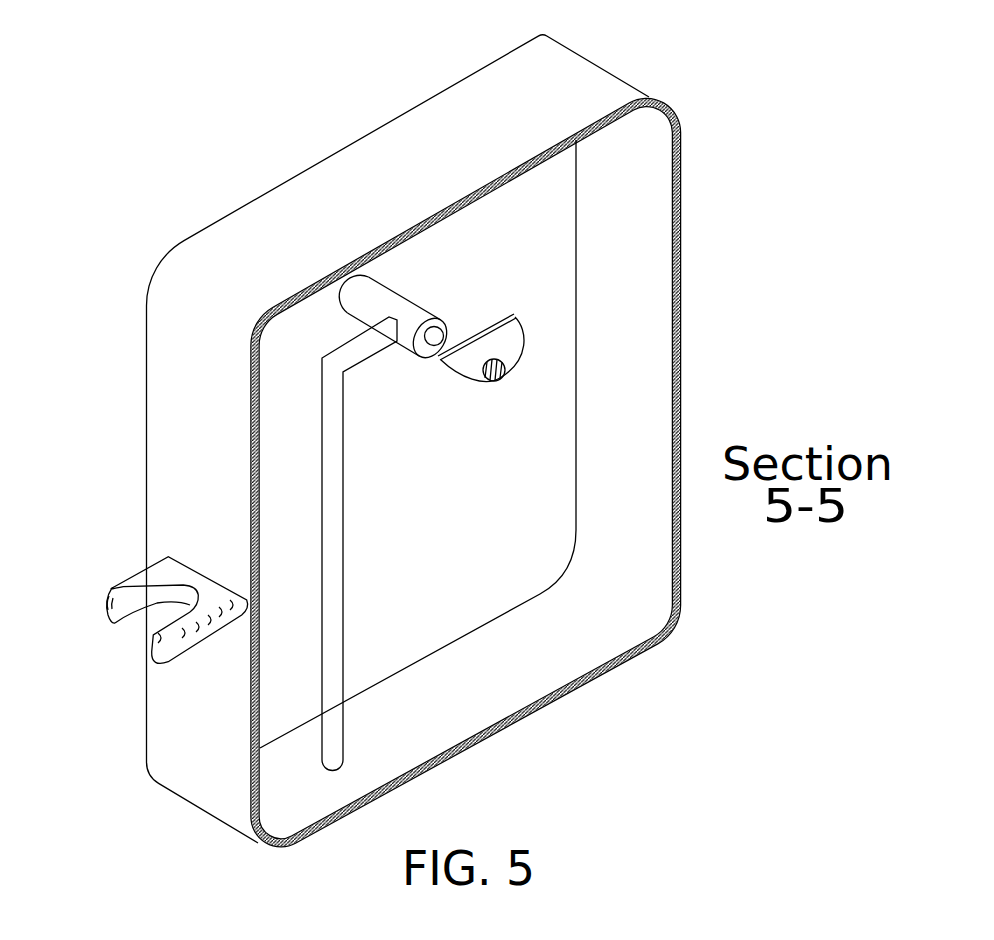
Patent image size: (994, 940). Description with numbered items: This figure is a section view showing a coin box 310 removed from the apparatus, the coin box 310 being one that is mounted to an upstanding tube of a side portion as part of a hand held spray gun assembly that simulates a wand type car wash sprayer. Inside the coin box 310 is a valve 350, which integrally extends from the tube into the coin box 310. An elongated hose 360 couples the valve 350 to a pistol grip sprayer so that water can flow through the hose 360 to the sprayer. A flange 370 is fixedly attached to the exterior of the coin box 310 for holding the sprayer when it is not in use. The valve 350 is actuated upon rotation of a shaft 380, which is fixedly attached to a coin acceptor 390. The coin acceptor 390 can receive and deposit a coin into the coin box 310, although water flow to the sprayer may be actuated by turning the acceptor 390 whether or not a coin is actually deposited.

The coin box 310 is at (250, 222).
The valve 350 is at (382, 300).
The elongated hose 360 is at (332, 568).
The flange 370 is at (128, 588).
The shaft 380 is at (445, 340).
The coin acceptor 390 is at (467, 373).